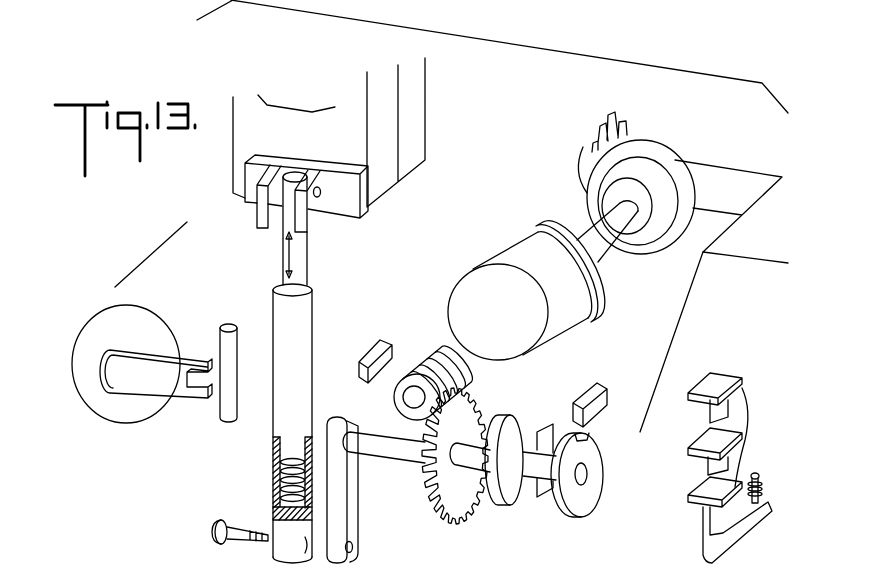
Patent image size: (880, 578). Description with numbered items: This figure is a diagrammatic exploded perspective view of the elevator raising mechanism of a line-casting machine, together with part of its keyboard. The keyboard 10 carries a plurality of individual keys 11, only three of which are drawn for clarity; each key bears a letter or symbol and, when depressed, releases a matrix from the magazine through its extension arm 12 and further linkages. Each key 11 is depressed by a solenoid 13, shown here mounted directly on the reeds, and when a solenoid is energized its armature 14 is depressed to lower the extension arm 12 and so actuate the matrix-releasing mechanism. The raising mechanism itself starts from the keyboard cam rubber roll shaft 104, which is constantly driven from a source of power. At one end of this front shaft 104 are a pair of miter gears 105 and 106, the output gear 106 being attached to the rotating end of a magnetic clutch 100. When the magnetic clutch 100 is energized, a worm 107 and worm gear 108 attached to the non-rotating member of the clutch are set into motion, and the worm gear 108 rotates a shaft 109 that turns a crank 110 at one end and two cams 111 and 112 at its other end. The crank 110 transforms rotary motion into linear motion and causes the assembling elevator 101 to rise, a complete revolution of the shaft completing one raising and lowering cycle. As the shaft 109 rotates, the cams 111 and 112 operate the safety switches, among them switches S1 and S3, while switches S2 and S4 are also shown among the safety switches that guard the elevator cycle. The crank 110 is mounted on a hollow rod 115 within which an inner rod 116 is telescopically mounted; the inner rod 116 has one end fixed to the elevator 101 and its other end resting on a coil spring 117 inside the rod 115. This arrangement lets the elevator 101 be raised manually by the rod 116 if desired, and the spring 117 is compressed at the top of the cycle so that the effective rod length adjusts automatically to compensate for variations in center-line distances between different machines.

The keyboard 10 is at (695, 343).
The keys 11 is at (743, 392).
The extension arm 12 is at (703, 543).
The solenoid 13 is at (763, 483).
The armature 14 is at (762, 475).
The magnetic clutch 100 is at (503, 243).
The assembling elevator 101 is at (420, 127).
The keyboard cam rubber roll shaft 104 is at (720, 177).
The miter gear 105 is at (620, 118).
The miter gear 106 is at (648, 157).
The worm 107 is at (426, 352).
The worm gear 108 is at (452, 503).
The shaft 109 is at (485, 448).
The crank 110 is at (350, 493).
The cam 111 is at (520, 493).
The cam 112 is at (590, 493).
The hollow rod 115 is at (303, 330).
The inner rod 116 is at (303, 260).
The coil spring 117 is at (273, 480).
The switch S1 is at (550, 430).
The switch S2 is at (388, 352).
The switch S3 is at (607, 402).
The switch S4 is at (237, 337).